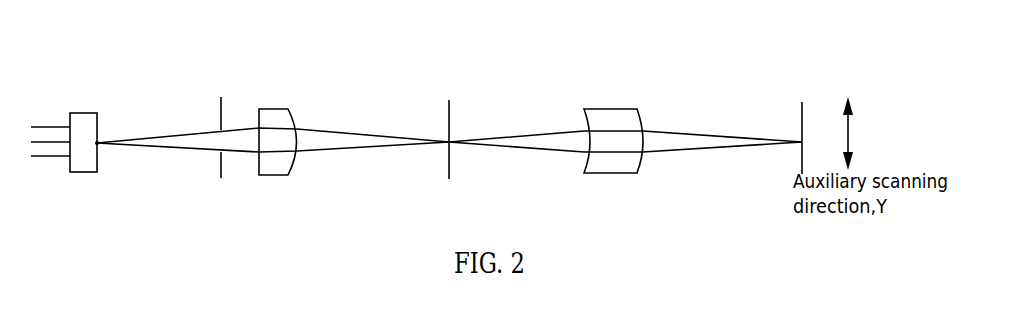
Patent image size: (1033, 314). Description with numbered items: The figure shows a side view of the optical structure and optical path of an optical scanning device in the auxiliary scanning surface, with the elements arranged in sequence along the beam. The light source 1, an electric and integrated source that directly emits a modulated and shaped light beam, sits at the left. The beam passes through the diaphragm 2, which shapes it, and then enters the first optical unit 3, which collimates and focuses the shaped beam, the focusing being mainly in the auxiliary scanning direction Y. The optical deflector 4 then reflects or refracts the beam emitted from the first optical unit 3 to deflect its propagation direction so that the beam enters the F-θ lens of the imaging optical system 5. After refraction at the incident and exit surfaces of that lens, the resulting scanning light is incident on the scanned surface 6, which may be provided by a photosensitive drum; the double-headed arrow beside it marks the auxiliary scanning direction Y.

The light source 1 is at (78, 113).
The diaphragm 2 is at (220, 110).
The first optical unit 3 is at (283, 109).
The optical deflector 4 is at (447, 104).
The imaging optical system 5 is at (610, 109).
The scanned surface 6 is at (800, 105).